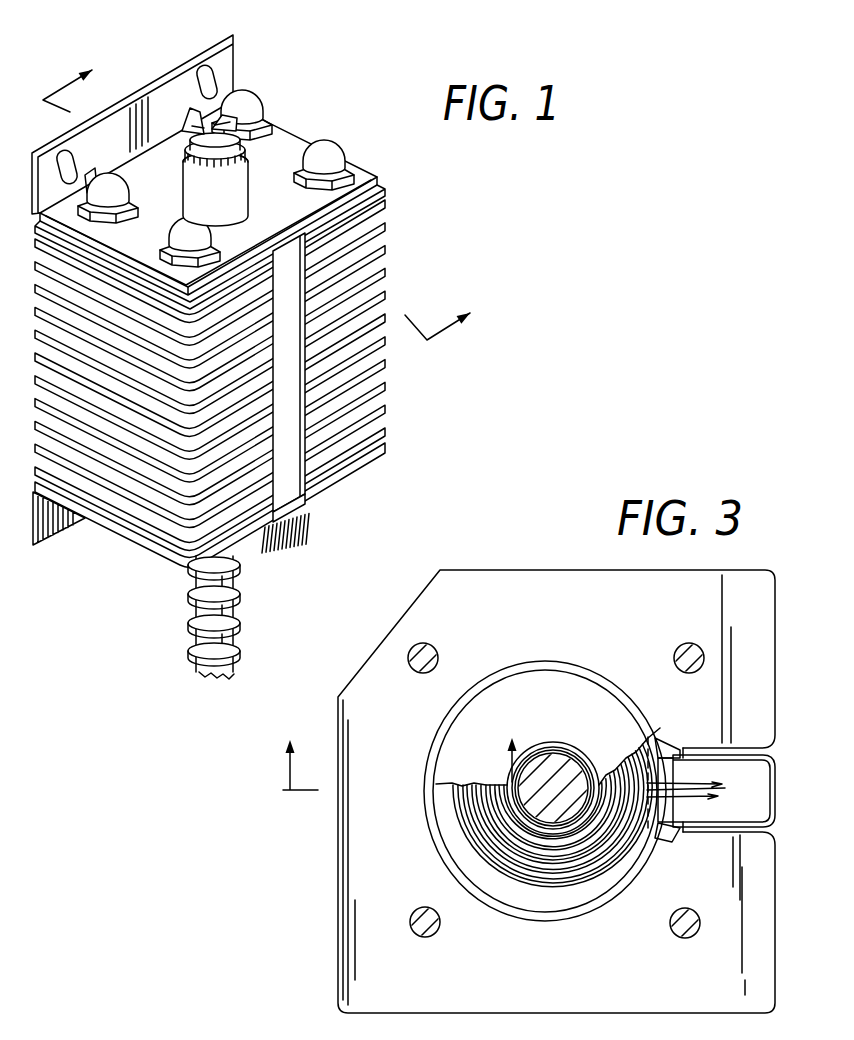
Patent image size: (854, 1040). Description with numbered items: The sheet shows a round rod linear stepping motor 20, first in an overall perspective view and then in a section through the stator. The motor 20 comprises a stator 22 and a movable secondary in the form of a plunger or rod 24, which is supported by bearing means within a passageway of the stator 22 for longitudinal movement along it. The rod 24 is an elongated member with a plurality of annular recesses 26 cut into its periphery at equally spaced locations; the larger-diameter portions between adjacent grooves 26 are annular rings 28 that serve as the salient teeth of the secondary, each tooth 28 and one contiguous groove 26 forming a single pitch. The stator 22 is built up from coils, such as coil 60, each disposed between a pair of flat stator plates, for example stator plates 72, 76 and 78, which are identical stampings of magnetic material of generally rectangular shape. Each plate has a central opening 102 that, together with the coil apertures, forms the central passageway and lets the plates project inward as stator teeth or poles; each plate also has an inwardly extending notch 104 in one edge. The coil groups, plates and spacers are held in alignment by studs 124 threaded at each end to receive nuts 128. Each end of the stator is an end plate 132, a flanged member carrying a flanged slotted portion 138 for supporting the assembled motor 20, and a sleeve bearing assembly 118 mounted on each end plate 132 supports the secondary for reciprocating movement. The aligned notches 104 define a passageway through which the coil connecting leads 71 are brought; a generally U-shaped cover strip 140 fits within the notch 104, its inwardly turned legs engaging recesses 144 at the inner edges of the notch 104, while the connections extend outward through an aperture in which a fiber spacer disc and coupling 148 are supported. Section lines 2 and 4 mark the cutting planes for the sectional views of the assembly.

In FIG. 1, the section line 2- 2 is at (268, 194).
In FIG. 3, the section line 4- 4 is at (399, 748).
In FIG. 1, the round rod linear stepping motor 20 is at (405, 223).
In FIG. 1, the stator 22 is at (286, 156).
In FIG. 1, the plunger or rod 24 is at (205, 135).
In FIG. 3, the plunger or rod 24 is at (558, 776).
In FIG. 1, the annular recesses 26 is at (229, 588).
In FIG. 1, the annular rings 28 is at (234, 646).
In FIG. 3, the coil 60 is at (571, 870).
In FIG. 1, the coil connecting leads 71 is at (308, 533).
In FIG. 3, the coil connecting leads 71 is at (702, 785).
In FIG. 1, the stator plate 72 is at (381, 193).
In FIG. 3, the stator plate 76 is at (540, 583).
In FIG. 1, the stator plate 78 is at (381, 251).
In FIG. 3, the central opening 102 is at (583, 783).
In FIG. 3, the notch 104 is at (737, 812).
In FIG. 1, the sleeve bearing assembly 118 is at (198, 182).
In FIG. 3, the studs 124 is at (417, 645).
In FIG. 1, the nuts 128 is at (329, 147).
In FIG. 1, the end plate 132 is at (287, 127).
In FIG. 1, the flanged slotted portion 138 is at (188, 76).
In FIG. 1, the cover strip 140 is at (288, 267).
In FIG. 3, the cover strip 140 is at (774, 779).
In FIG. 3, the recesses 144 is at (657, 841).
In FIG. 1, the fiber spacer disc and coupling 148 is at (303, 508).